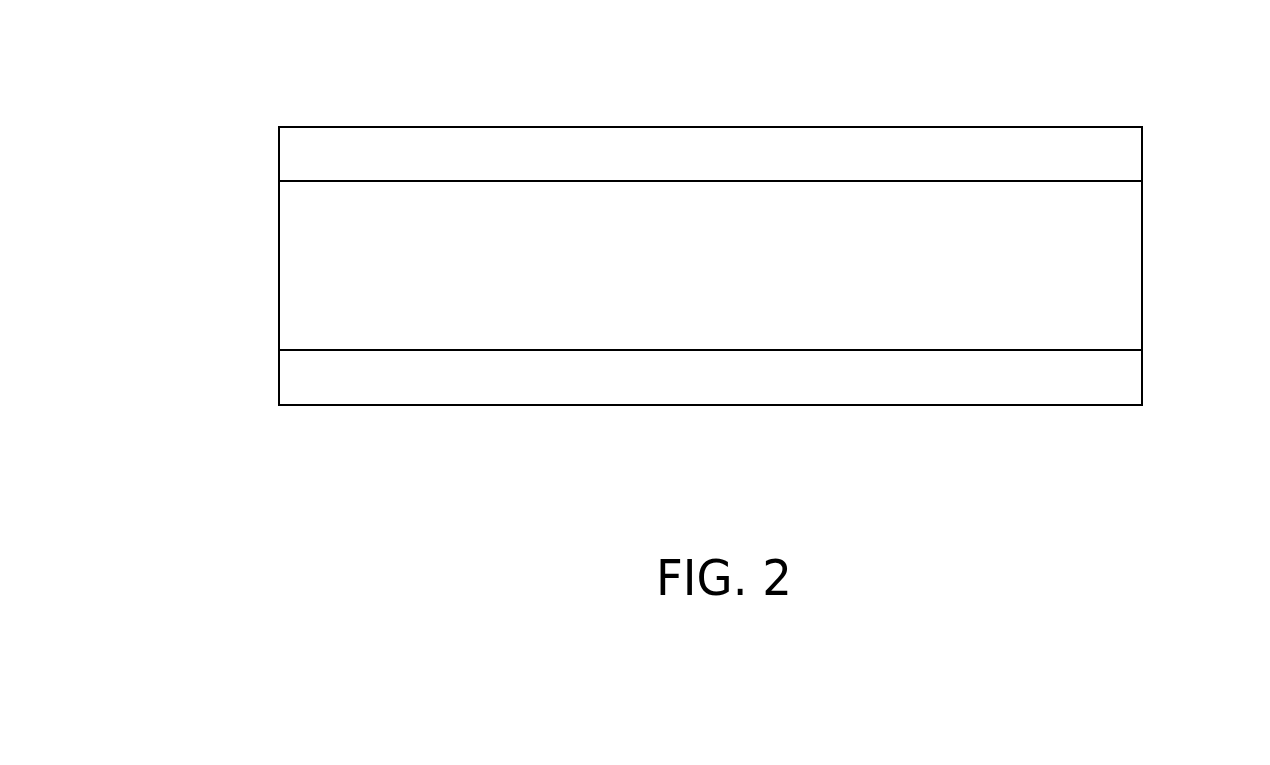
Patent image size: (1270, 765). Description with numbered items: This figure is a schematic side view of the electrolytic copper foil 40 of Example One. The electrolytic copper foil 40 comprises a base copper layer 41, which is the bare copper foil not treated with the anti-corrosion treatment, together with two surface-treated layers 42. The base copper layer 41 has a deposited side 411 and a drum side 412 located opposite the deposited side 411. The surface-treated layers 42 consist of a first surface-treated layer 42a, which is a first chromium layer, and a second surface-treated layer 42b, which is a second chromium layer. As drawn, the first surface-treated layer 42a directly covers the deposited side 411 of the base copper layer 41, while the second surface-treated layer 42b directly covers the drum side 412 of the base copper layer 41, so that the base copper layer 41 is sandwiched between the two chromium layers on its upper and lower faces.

The electrolytic copper foil 40 is at (1137, 107).
The base copper layer 41 is at (1118, 265).
The deposited side 411 is at (1142, 182).
The drum side 412 is at (1142, 350).
The surface-treated layers 42 is at (200, 392).
The first surface-treated layer 42a is at (315, 163).
The second surface-treated layer 42b is at (315, 388).